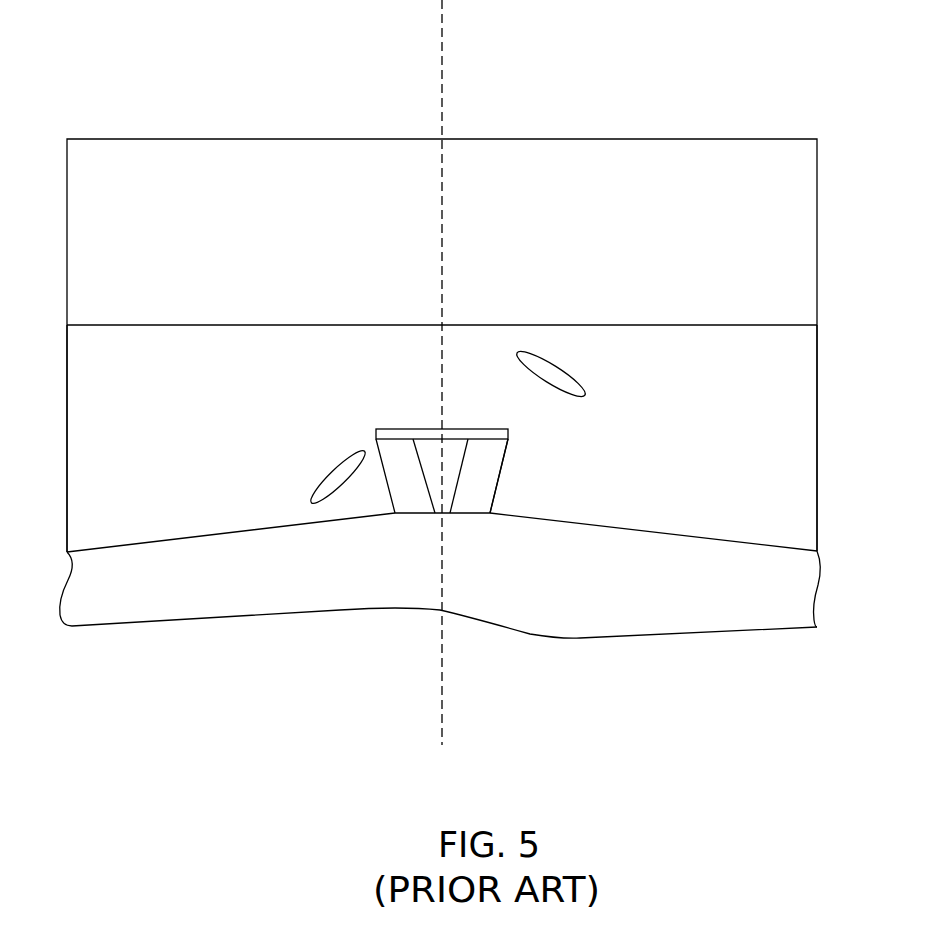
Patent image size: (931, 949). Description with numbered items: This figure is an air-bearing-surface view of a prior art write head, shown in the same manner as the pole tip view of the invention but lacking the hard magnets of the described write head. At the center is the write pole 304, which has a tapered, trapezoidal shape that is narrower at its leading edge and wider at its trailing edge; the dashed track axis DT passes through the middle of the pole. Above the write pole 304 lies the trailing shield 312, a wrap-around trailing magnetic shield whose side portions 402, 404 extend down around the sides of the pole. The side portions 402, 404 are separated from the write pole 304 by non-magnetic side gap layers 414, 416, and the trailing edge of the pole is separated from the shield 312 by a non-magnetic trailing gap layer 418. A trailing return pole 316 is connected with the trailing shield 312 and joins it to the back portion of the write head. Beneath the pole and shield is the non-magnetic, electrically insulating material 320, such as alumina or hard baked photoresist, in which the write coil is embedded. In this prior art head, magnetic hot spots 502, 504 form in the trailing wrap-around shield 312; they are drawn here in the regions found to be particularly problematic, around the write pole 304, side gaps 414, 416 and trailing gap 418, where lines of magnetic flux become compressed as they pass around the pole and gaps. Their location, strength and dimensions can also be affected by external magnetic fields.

The axis / dashed centerline DT is at (444, 44).
The trailing return pole 316 is at (352, 234).
The trailing shield 312 is at (303, 367).
The non-magnetic, electrically insulating material 320 is at (605, 577).
The write pole 304 is at (460, 456).
The non-magnetic side gap layer 414 is at (483, 477).
The non-magnetic side gap layer 416 is at (403, 455).
The non-magnetic trailing gap layer 418 is at (460, 436).
The magnetic hot spot 502 is at (348, 470).
The magnetic hot spot 504 is at (556, 374).
The side portion of the trailing shield 404 is at (190, 468).
The side portion of the trailing shield 402 is at (753, 473).